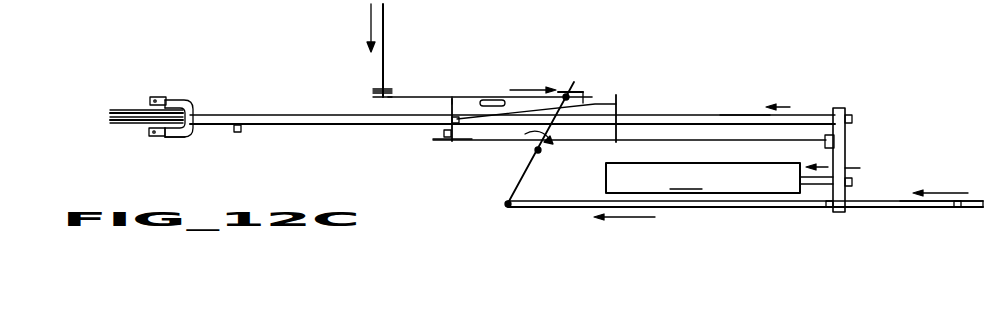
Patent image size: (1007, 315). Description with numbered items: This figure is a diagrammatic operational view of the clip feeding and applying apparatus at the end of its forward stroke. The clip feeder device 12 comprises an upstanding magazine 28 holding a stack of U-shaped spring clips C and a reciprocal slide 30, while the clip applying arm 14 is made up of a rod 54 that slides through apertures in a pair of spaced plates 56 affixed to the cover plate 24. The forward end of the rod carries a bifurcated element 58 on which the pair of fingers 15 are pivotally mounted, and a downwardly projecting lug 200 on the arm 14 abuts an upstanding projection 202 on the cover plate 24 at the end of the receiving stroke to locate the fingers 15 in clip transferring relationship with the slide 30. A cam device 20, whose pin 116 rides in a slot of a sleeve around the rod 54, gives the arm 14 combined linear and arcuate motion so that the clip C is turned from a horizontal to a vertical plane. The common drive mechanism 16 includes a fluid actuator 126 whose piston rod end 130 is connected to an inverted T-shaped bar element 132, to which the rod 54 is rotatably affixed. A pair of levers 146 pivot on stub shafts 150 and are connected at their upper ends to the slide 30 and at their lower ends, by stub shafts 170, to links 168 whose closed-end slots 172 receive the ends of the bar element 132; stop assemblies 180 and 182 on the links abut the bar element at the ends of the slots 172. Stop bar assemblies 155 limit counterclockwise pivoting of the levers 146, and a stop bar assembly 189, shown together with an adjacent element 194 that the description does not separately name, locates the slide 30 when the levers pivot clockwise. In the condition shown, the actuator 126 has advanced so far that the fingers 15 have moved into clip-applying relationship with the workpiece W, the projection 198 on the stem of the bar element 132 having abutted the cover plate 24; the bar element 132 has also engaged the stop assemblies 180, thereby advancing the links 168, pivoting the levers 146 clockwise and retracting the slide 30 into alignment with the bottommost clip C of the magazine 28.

The clip feeder device 12 is at (455, 88).
The clip applying arm 14 is at (695, 113).
The fingers 15 is at (157, 98).
The common drive mechanism 16 is at (809, 188).
The cam device 20 is at (483, 112).
The cover plate 24 is at (793, 142).
The magazine 28 is at (398, 50).
The slide 30 is at (411, 96).
The rod 54 is at (731, 114).
The spaced plates 56 is at (617, 100).
The bifurcated element 58 is at (188, 100).
The pin 116 is at (456, 136).
The fluid actuator 126 is at (703, 178).
The piston rod end 130 is at (821, 190).
The bar element 132 is at (843, 155).
The levers 146 is at (527, 170).
The stub shaft 150 is at (543, 149).
The stop bar assemblies 155 is at (498, 96).
The links 168 is at (692, 203).
The stub shaft 170 is at (508, 206).
The closed-end slot 172 is at (898, 202).
The stop assembly 180 is at (828, 207).
The stop assembly 182 is at (960, 210).
The stop bar assembly 189 is at (575, 82).
The bar 194 is at (588, 99).
The projection 198 is at (832, 143).
The lug 200 is at (238, 132).
The projection 202 is at (447, 137).
The spring clip C is at (381, 88).
The workpiece W is at (110, 113).